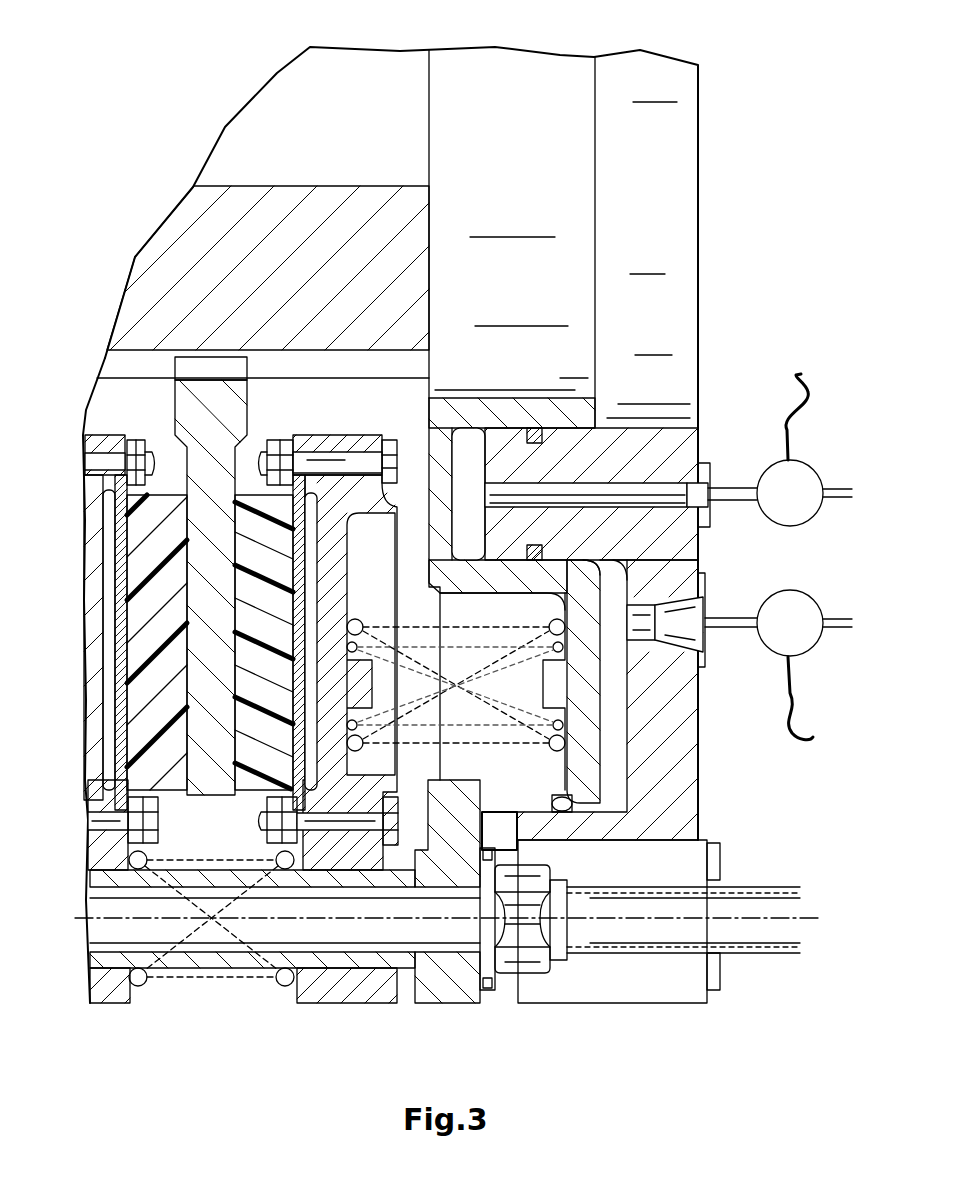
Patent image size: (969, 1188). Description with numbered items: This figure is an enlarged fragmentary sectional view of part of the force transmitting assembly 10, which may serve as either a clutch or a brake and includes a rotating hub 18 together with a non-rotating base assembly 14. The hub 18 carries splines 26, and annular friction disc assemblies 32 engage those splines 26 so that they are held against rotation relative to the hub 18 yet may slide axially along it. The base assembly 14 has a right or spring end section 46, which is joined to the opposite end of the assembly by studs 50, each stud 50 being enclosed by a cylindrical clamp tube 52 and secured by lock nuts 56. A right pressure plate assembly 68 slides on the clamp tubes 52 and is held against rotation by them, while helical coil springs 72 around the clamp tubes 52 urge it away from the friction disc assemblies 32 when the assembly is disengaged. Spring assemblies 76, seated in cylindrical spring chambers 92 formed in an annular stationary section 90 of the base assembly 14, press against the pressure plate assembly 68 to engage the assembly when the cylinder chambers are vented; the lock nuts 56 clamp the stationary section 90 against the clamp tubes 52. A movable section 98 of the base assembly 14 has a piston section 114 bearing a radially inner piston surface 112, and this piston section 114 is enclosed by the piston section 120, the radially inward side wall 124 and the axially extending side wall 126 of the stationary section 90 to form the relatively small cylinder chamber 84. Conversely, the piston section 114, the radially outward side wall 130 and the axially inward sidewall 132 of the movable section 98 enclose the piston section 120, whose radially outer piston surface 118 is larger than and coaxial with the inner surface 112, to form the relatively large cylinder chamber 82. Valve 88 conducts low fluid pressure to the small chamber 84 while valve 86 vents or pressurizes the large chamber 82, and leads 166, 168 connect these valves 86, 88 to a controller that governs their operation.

The force transmitting assembly 10 is at (742, 166).
The base assembly 14 is at (702, 284).
The hub 18 is at (398, 242).
The splines 26 is at (340, 368).
The friction disc assemblies 32 is at (263, 395).
The right end section 46 is at (591, 1006).
The studs 50 is at (795, 942).
The clamp tube 52 is at (213, 960).
The lock nuts 56 is at (530, 960).
The pressure plate assembly 68 is at (344, 1006).
The helical coil springs 72 is at (283, 987).
The spring assemblies 76 is at (545, 760).
The cylinder chamber 82 is at (607, 768).
The cylinder chamber 84 is at (466, 483).
The valve 86 is at (805, 607).
The valve 88 is at (807, 477).
The stationary section 90 is at (440, 1006).
The spring chambers 92 is at (493, 763).
The movable section 98 is at (651, 1006).
The radially inner piston surface 112 is at (487, 440).
The piston section 114 is at (585, 455).
The radially outer piston surface 118 is at (598, 691).
The piston section 120 is at (580, 738).
The side wall 124 is at (440, 487).
The side wall 126 is at (482, 412).
The side wall 130 is at (665, 752).
The sidewall 132 is at (575, 823).
The lead 166 is at (798, 693).
The lead 168 is at (813, 393).